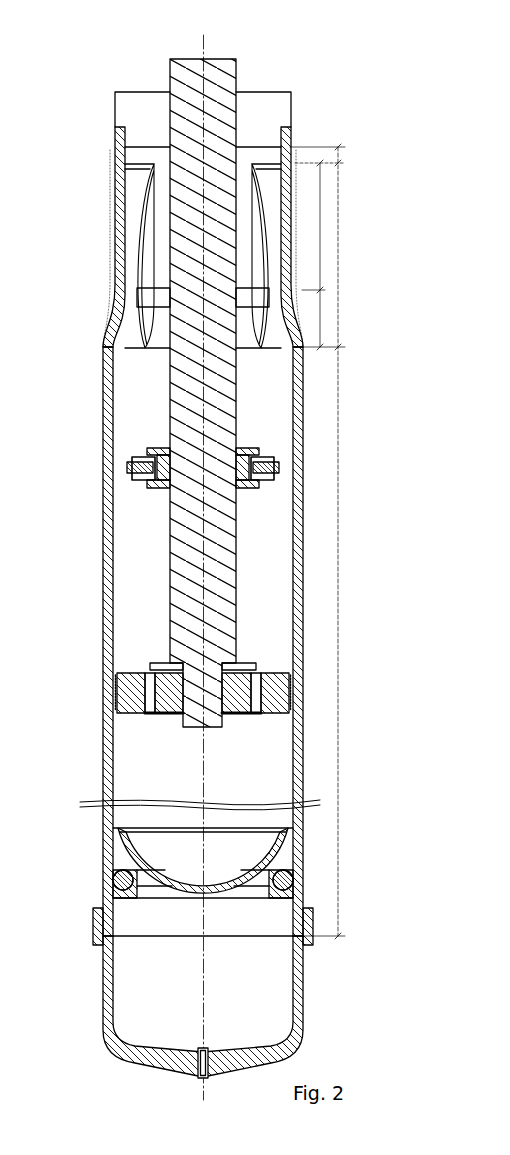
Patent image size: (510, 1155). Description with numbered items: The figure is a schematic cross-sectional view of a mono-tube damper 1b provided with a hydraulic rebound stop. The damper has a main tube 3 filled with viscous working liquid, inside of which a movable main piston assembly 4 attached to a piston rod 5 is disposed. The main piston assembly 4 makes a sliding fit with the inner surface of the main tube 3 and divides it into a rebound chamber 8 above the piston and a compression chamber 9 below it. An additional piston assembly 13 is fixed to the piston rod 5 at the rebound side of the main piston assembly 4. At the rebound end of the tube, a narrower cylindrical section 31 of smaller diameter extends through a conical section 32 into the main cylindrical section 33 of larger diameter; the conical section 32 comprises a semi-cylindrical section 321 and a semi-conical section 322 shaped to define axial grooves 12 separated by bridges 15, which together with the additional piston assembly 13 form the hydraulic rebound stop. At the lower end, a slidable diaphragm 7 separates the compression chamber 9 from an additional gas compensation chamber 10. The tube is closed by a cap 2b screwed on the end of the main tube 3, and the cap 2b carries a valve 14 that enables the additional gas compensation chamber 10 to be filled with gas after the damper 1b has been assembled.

The mono-tube damper 1b is at (108, 78).
The cap 2b is at (103, 990).
The main tube 3 is at (103, 472).
The main piston assembly 4 is at (133, 688).
The piston rod 5 is at (188, 385).
The slidable diaphragm 7 is at (113, 842).
The rebound chamber 8 is at (142, 413).
The compression chamber 9 is at (187, 760).
The additional gas compensation chamber 10 is at (187, 970).
The axial grooves 12 is at (133, 265).
The additional piston assembly 13 is at (152, 480).
The valve 14 is at (150, 1067).
The bridges 15 is at (163, 242).
The narrower cylindrical section 31 is at (334, 157).
The conical section 32 is at (338, 256).
The semi-cylindrical section 321 is at (321, 207).
The semi-conical section 322 is at (321, 315).
The main cylindrical section 33 is at (339, 697).